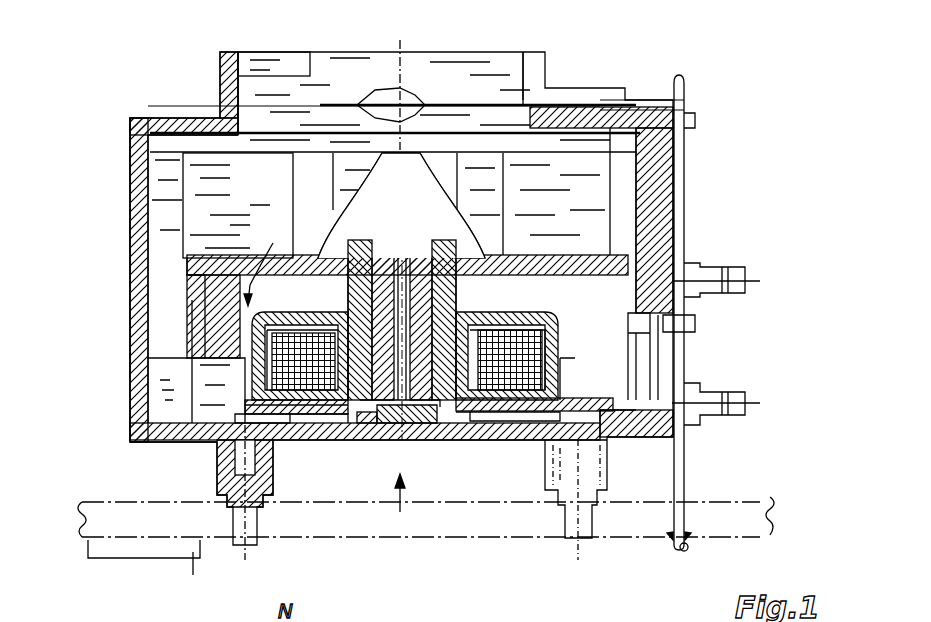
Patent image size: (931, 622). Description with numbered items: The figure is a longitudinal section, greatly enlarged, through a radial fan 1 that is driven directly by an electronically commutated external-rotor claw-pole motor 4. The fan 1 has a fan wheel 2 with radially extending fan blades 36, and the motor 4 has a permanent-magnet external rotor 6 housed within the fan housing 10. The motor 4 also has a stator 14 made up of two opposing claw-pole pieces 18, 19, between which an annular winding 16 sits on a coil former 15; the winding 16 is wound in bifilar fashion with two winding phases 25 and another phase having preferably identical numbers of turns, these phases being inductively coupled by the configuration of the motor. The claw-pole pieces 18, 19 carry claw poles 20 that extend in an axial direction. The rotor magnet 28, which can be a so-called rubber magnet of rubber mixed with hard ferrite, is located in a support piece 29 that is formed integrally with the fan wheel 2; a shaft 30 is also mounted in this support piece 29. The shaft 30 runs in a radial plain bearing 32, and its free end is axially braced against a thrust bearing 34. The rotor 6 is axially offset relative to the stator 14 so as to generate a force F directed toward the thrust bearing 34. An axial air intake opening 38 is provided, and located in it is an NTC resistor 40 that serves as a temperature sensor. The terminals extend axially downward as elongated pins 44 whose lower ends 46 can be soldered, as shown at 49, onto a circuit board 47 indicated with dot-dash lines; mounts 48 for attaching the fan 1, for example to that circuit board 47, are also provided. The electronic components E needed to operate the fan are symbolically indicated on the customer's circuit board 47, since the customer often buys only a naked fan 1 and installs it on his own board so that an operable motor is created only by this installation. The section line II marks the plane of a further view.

The fan 1 is at (120, 452).
The fan wheel 2 is at (180, 180).
The electronically commutated external-rotor claw-pole motor 4 is at (192, 372).
The permanent-magnet external rotor 6 is at (618, 335).
The fan housing 10 is at (132, 203).
The stator 14 is at (556, 300).
The coil former 15 is at (302, 327).
The annular winding 16 is at (558, 383).
The claw-pole piece 18 is at (492, 300).
The claw-pole piece 19 is at (340, 435).
The claw poles 20 is at (255, 378).
The winding phase 25 is at (298, 430).
The rotor magnet 28 is at (215, 343).
The support piece 29 is at (192, 303).
The shaft 30 is at (404, 192).
The radial plain bearing 32 is at (460, 250).
The thrust bearing 34 is at (420, 430).
The fan blades 36 is at (396, 193).
The axial air intake opening 38 is at (343, 65).
The NTC resistor 40 is at (412, 96).
The elongated pins 44 is at (695, 450).
The lower ends of pins 46 is at (689, 551).
The circuit board 47 is at (768, 540).
The mounts 48 is at (738, 295).
The solder joint 49 is at (672, 538).
The electronic components E is at (148, 568).
The force F is at (264, 265).
The section line II is at (397, 512).